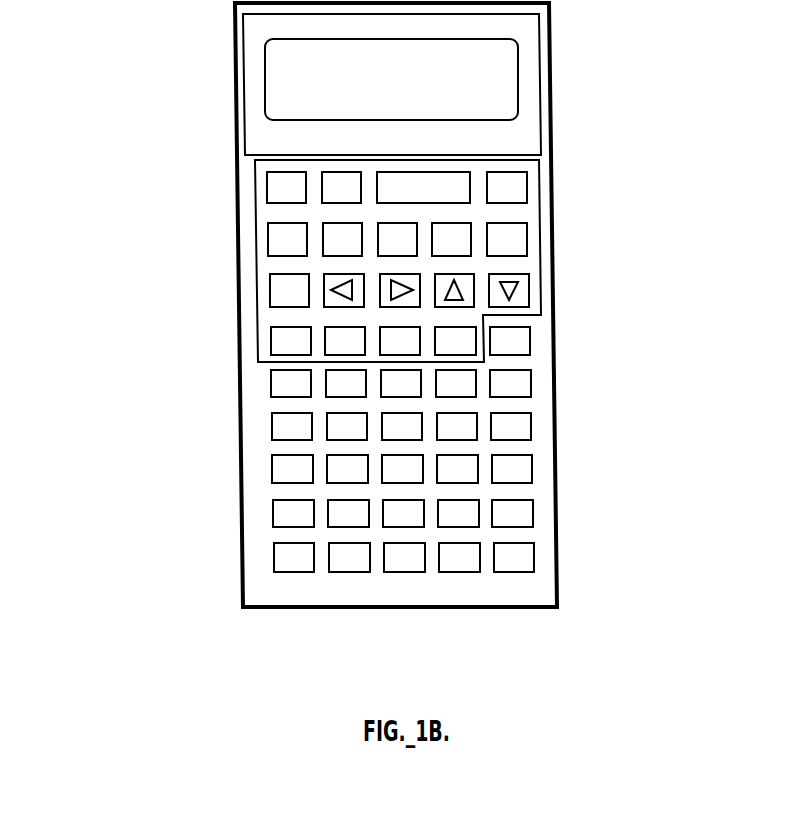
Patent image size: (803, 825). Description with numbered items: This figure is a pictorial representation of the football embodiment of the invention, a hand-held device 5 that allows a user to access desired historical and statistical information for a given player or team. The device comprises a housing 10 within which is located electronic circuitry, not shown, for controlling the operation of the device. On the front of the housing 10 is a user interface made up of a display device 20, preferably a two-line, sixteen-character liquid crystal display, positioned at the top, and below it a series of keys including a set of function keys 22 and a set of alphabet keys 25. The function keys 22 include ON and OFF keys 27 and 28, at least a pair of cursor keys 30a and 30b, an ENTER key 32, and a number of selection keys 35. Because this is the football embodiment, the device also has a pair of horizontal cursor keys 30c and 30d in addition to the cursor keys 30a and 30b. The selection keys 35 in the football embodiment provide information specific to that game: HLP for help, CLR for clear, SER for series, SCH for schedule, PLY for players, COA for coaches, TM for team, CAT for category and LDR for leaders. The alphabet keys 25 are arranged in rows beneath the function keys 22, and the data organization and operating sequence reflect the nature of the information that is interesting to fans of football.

The hand-held device 5 is at (131, 373).
The housing 10 is at (556, 140).
The display device 20 is at (520, 82).
The function keys 22 is at (254, 302).
The alphabet keys 25 is at (527, 431).
The ON key 27 is at (520, 198).
The OFF key 28 is at (513, 229).
The cursor key 30a is at (465, 279).
The cursor key 30b is at (524, 297).
The horizontal cursor key 30c is at (398, 272).
The horizontal cursor key 30d is at (343, 273).
The ENTER key 32 is at (453, 200).
The selection keys 35 is at (268, 240).